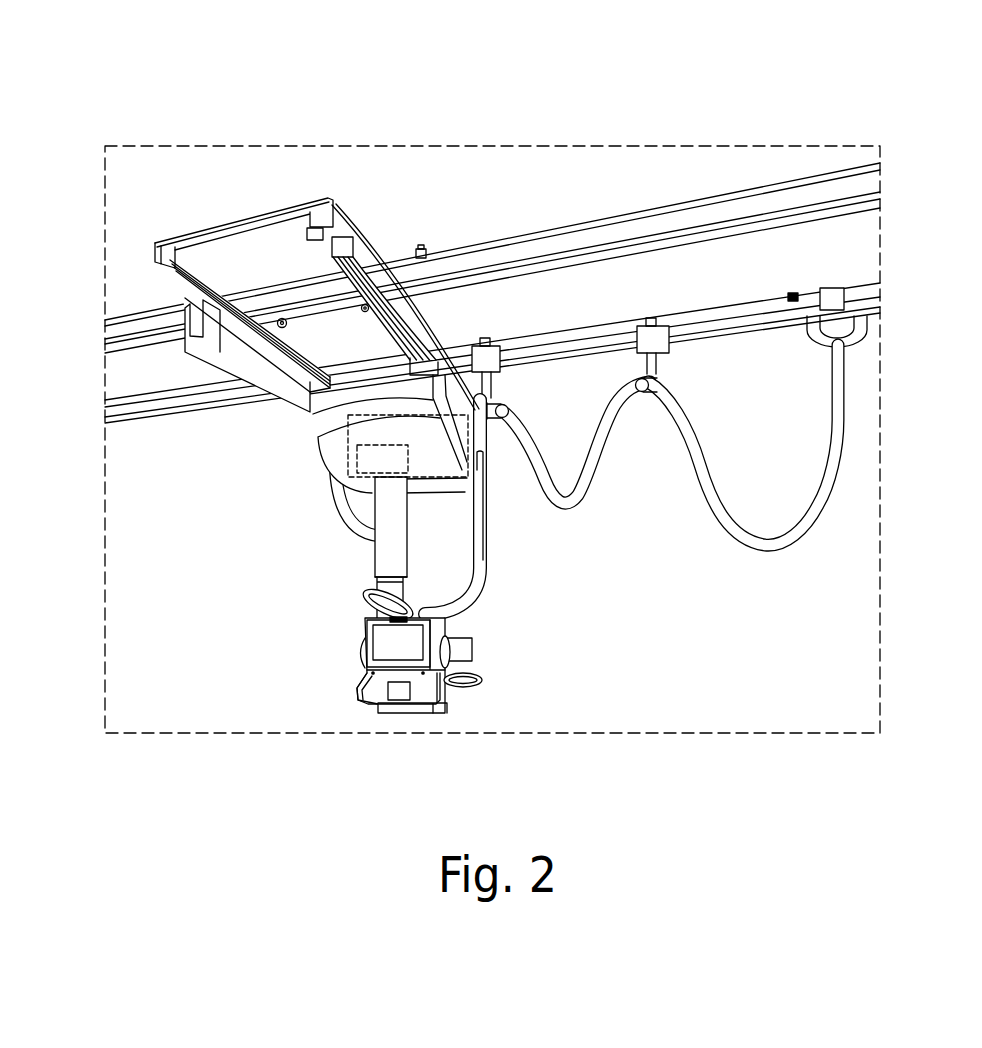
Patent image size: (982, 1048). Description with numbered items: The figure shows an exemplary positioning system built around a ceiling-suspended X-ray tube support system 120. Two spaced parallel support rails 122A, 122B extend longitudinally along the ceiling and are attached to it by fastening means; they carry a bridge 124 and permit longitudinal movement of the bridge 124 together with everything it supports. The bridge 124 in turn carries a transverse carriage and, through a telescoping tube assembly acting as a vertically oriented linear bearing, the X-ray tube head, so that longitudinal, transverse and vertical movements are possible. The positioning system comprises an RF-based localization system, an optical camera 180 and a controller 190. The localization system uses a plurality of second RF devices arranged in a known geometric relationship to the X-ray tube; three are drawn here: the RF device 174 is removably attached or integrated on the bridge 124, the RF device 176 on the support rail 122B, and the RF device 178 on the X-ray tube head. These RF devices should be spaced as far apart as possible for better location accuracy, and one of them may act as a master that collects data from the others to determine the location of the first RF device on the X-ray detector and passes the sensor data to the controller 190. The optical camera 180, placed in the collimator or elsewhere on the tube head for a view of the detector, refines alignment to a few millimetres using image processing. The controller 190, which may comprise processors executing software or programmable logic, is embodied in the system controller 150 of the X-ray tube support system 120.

The X-ray tube support system 120 is at (731, 100).
The support rail 122A is at (613, 252).
The support rail 122B is at (752, 322).
The bridge 124 is at (177, 277).
The RF device 174 is at (353, 240).
The RF device 176 is at (832, 287).
The system controller 150 is at (408, 446).
The controller 190 is at (383, 459).
The RF device 178 is at (470, 648).
The optical camera 180 is at (400, 721).